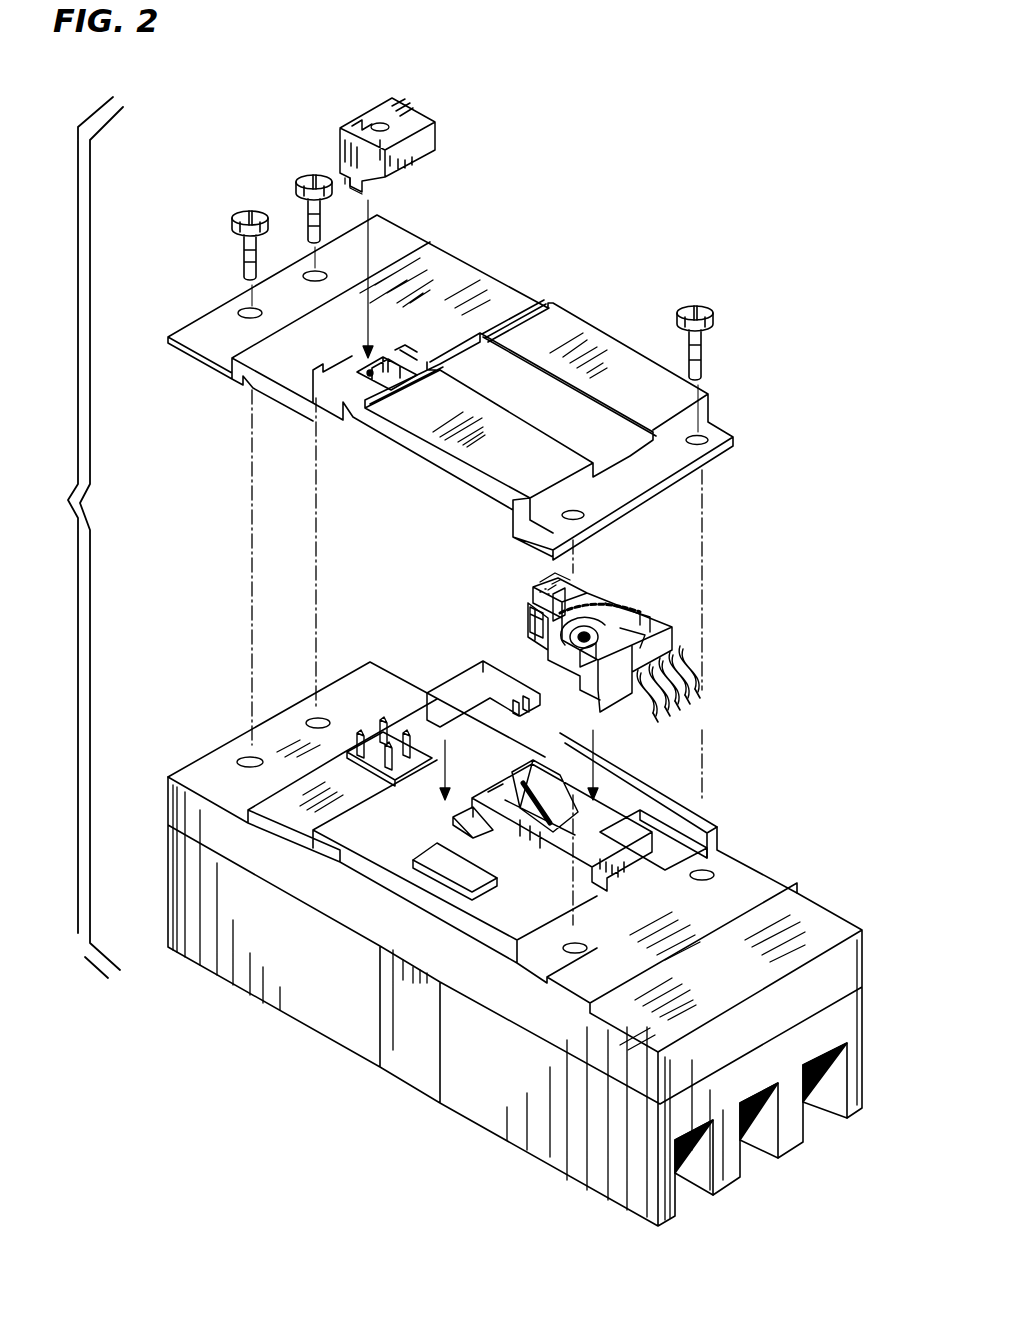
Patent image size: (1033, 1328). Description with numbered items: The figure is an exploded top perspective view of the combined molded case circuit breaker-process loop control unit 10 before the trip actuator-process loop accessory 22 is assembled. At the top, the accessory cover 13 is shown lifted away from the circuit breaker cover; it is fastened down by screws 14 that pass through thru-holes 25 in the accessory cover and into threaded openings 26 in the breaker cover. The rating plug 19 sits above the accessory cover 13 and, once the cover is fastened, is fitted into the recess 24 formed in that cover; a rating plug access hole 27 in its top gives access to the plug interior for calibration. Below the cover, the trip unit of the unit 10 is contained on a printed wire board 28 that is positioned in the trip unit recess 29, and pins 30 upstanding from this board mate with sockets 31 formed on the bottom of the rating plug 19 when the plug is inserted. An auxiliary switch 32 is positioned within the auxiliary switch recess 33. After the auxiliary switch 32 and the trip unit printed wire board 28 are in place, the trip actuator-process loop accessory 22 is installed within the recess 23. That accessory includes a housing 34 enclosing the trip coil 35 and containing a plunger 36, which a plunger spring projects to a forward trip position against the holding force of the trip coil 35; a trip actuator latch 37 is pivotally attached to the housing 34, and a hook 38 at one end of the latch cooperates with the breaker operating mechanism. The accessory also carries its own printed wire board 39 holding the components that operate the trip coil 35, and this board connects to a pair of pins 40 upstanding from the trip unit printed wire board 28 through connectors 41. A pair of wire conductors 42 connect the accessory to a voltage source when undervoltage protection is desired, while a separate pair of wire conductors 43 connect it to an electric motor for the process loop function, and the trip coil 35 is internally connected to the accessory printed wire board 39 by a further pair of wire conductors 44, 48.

The combined molded case circuit breaker-process loop control unit 10 is at (78, 537).
The accessory cover 13 is at (313, 413).
The screws 14 is at (307, 210).
The rating plug 19 is at (420, 107).
The trip actuator-process loop accessory 22 is at (646, 659).
The recess 23 is at (581, 779).
The recess 24 is at (368, 371).
The thru-holes 25 is at (243, 310).
The threaded openings 26 is at (249, 757).
The rating plug access hole 27 is at (379, 120).
The printed wire board 28 is at (431, 734).
The trip unit recess 29 is at (411, 849).
The pins 30 is at (403, 735).
The sockets 31 is at (348, 175).
The auxiliary switch 32 is at (446, 886).
The auxiliary switch recess 33 is at (470, 890).
The housing 34 is at (673, 643).
The trip coil 35 is at (590, 660).
The plunger 36 is at (587, 638).
The trip actuator latch 37 is at (527, 615).
The hook 38 is at (537, 653).
The printed wire board 39 is at (607, 613).
The pins 40 is at (517, 700).
The connectors 41 is at (543, 577).
The wire conductors 42 is at (650, 713).
The wire conductors 43 is at (682, 683).
The wire conductor 44 is at (640, 620).
The wire conductor 48 is at (640, 625).